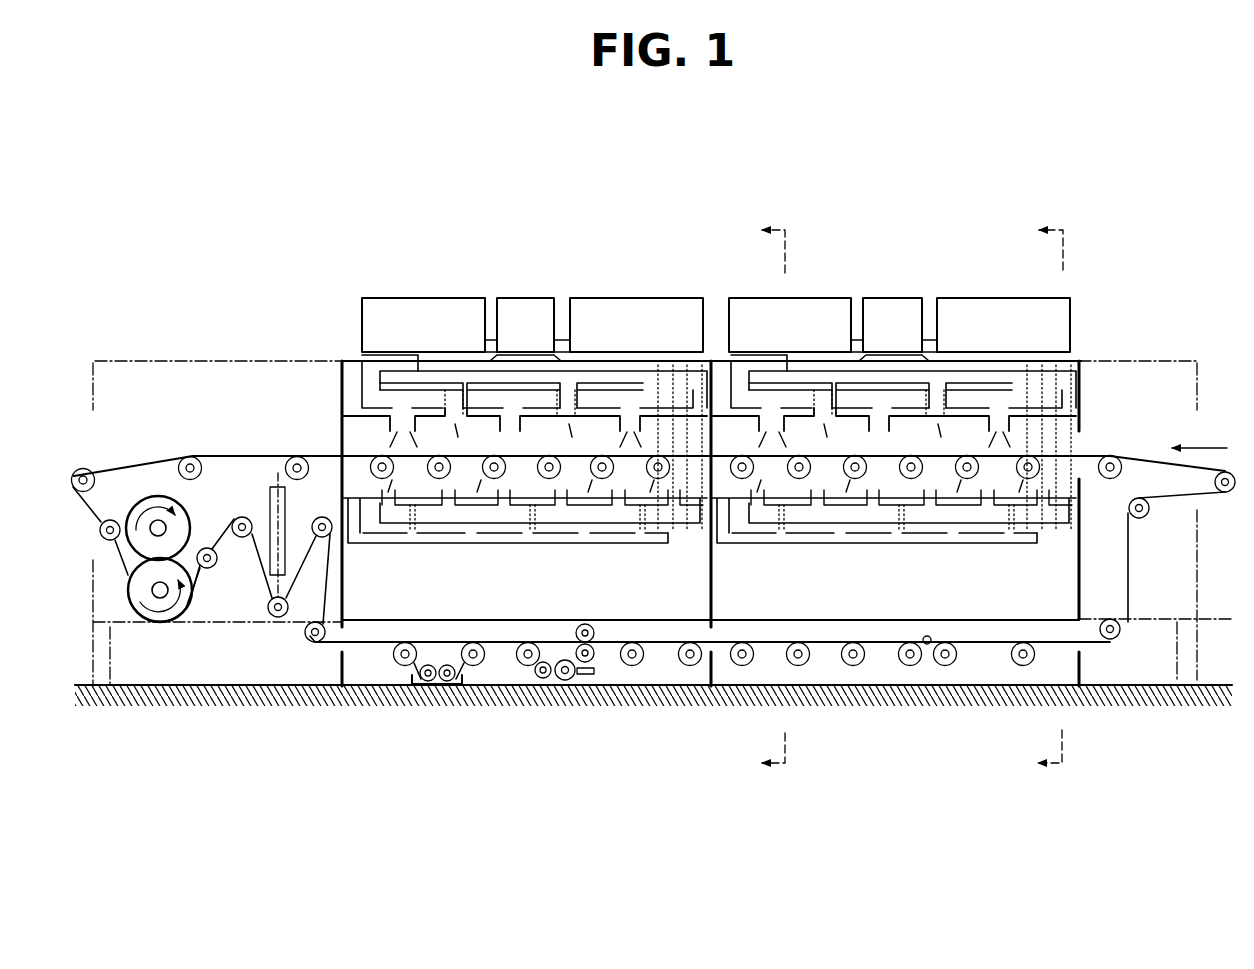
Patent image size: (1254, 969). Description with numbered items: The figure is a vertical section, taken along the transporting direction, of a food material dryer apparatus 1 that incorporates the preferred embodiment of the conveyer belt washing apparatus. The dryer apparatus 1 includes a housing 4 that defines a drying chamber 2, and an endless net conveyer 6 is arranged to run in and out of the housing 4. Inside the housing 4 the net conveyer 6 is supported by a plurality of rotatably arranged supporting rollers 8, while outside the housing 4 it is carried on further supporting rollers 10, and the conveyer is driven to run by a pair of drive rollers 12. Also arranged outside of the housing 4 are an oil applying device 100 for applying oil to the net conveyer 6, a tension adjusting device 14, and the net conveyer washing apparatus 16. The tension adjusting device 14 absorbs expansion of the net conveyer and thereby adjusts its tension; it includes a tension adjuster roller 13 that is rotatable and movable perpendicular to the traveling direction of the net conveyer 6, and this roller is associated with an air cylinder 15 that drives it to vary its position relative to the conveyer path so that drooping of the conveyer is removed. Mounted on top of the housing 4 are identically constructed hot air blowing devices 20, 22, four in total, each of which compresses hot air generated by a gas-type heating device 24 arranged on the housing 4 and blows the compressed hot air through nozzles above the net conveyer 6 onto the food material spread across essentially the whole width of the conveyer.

The food material dryer apparatus 1 is at (627, 232).
The drying chamber 2 is at (600, 597).
The housing 4 is at (1071, 355).
The net conveyer 6 is at (245, 457).
The supporting rollers 8 is at (373, 462).
The supporting rollers 10 is at (798, 662).
The drive rollers 12 is at (200, 575).
The tension adjuster roller 13 is at (278, 617).
The tension adjusting device 14 is at (263, 533).
The air cylinder 15 is at (264, 470).
The net conveyer washing apparatus 16 is at (456, 694).
The hot air blowing device 20 is at (888, 293).
The hot air blowing device 22 is at (407, 297).
The gas-type heating device 24 is at (518, 307).
The oil applying device 100 is at (547, 686).